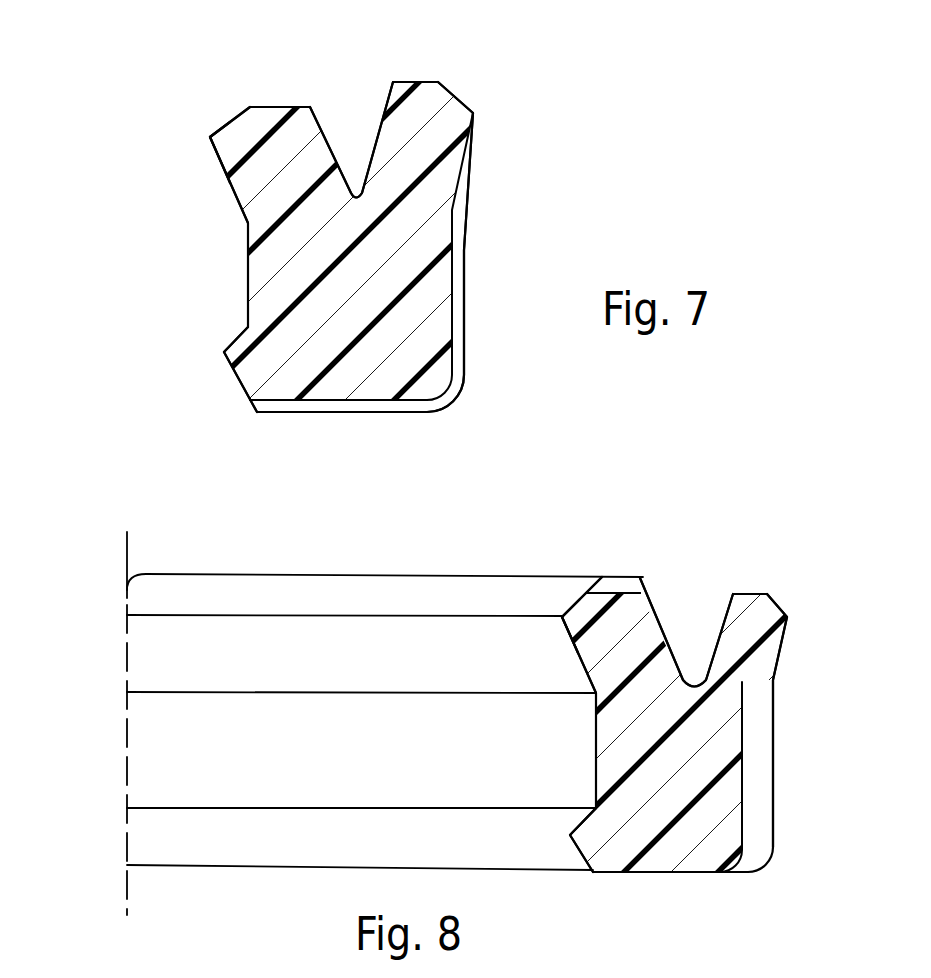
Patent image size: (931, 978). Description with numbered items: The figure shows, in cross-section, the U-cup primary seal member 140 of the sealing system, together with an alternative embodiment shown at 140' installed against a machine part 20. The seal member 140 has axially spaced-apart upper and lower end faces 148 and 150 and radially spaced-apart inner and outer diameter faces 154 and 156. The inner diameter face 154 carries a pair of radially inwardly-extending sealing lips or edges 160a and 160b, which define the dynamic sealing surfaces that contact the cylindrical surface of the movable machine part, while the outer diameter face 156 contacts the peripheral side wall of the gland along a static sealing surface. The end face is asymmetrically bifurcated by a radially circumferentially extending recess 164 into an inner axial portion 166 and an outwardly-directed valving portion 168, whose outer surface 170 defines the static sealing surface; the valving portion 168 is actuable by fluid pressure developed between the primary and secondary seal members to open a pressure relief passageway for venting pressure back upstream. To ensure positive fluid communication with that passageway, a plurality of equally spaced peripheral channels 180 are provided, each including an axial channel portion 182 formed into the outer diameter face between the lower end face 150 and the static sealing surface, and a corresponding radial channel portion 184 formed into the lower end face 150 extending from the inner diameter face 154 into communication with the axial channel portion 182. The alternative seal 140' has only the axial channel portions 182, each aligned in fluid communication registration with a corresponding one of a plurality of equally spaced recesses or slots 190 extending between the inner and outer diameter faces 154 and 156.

In FIG. 7, the primary seal member 140 is at (372, 239).
In FIG. 8, the alternative embodiment of seal member 140' is at (622, 659).
In FIG. 8, the body 20 is at (127, 563).
In FIG. 7, the upper end face 148 is at (273, 107).
In FIG. 8, the upper end face 148 is at (607, 593).
In FIG. 7, the lower end face 150 is at (387, 412).
In FIG. 8, the lower end face 150 is at (649, 873).
In FIG. 7, the inner diameter face 154 is at (231, 187).
In FIG. 8, the inner diameter face 154 is at (578, 652).
In FIG. 7, the outer diameter face 156 is at (465, 148).
In FIG. 8, the outer diameter face 156 is at (779, 643).
In FIG. 7, the sealing lip 160a is at (211, 137).
In FIG. 8, the sealing lip 160a is at (565, 618).
In FIG. 7, the sealing lip 160b is at (224, 352).
In FIG. 8, the sealing lip 160b is at (581, 853).
In FIG. 7, the recess 164 is at (343, 118).
In FIG. 8, the recess 164 is at (689, 600).
In FIG. 7, the inner axial portion 166 is at (226, 125).
In FIG. 8, the inner axial portion 166 is at (574, 605).
In FIG. 7, the valving portion 168 is at (412, 82).
In FIG. 8, the valving portion 168 is at (744, 594).
In FIG. 7, the outer surface 170 is at (470, 112).
In FIG. 8, the outer surface 170 is at (777, 605).
In FIG. 7, the peripheral channel 180 is at (492, 388).
In FIG. 7, the axial channel portion 182 is at (478, 267).
In FIG. 8, the axial channel portion 182 is at (787, 763).
In FIG. 7, the radial channel portion 184 is at (317, 413).
In FIG. 8, the recess 190 is at (133, 559).